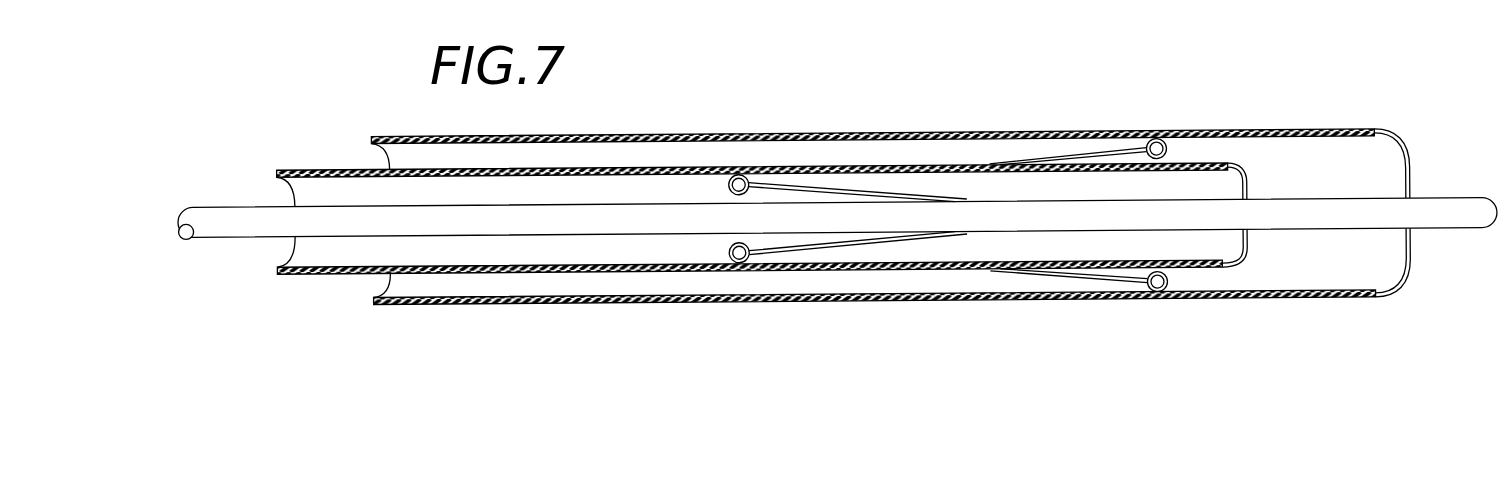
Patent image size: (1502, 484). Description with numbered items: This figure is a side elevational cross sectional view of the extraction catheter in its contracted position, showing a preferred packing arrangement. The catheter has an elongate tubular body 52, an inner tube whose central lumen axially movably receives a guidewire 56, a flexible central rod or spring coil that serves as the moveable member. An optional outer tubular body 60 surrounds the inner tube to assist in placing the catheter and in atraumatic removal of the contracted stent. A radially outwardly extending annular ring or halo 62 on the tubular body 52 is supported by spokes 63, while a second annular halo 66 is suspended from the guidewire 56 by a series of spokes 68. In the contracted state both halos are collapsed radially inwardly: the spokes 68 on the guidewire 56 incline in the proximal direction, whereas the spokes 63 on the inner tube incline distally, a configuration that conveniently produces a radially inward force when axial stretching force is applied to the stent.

The elongate tubular body 52 is at (625, 275).
The guidewire 56 is at (565, 228).
The outer tubular body 60 is at (1350, 304).
The halo 62 is at (1170, 295).
The spokes 63 is at (1102, 160).
The second annular halo 66 is at (731, 179).
The spokes 68 is at (857, 195).